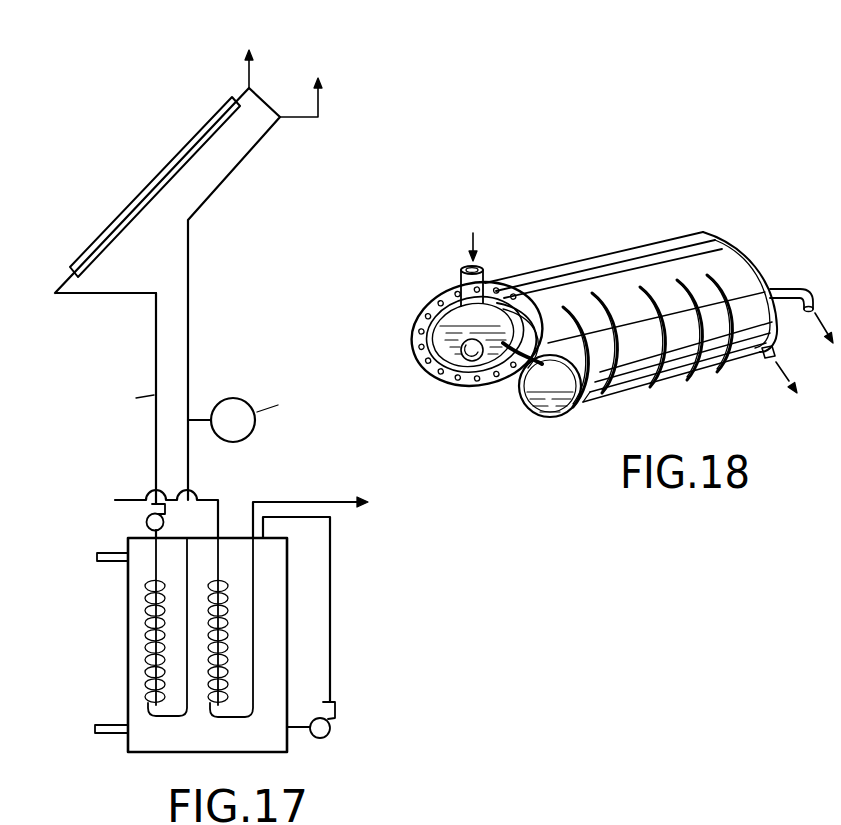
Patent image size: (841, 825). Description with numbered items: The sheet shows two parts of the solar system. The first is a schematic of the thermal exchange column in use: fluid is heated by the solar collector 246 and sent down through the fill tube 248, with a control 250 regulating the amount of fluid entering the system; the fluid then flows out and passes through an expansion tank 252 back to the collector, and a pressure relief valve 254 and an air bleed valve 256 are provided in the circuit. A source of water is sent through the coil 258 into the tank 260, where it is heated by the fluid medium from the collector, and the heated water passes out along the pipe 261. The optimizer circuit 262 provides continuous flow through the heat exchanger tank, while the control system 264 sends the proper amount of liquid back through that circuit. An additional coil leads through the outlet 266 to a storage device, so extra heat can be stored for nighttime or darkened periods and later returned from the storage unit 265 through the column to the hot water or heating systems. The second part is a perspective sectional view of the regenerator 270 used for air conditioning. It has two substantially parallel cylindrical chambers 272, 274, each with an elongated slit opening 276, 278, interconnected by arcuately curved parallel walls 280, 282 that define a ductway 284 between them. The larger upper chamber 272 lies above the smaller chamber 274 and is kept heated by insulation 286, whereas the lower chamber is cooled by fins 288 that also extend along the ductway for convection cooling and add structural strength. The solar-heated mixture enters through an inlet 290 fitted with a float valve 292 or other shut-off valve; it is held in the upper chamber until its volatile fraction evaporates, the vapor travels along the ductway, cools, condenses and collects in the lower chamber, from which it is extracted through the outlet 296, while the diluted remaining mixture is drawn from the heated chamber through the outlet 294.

In FIG. 17, the solar collector 246 is at (157, 175).
In FIG. 17, the fill tube 248 is at (154, 342).
In FIG. 17, the control 250 is at (147, 525).
In FIG. 17, the expansion tank 252 is at (250, 381).
In FIG. 17, the pressure relief valve 254 is at (303, 119).
In FIG. 17, the air bleed valve 256 is at (245, 87).
In FIG. 17, the coil 258 is at (211, 500).
In FIG. 17, the tank 260 is at (131, 642).
In FIG. 17, the pipe 261 is at (306, 501).
In FIG. 17, the optimizer circuit 262 is at (332, 557).
In FIG. 17, the control system 264 is at (331, 738).
In FIG. 17, the storage unit 265 is at (108, 563).
In FIG. 17, the outlet 266 is at (113, 736).
In FIG. 18, the regenerator 270 is at (661, 218).
In FIG. 18, the cylindrical chamber 272 is at (453, 307).
In FIG. 18, the cylindrical chamber 274 is at (560, 393).
In FIG. 18, the elongated slit opening 276 is at (507, 289).
In FIG. 18, the elongated slit opening 278 is at (588, 403).
In FIG. 18, the arcuately curved parallel wall 280 is at (500, 373).
In FIG. 18, the arcuately curved parallel wall 282 is at (511, 392).
In FIG. 18, the ductway 284 is at (537, 312).
In FIG. 18, the insulation 286 is at (421, 334).
In FIG. 18, the fins 288 is at (690, 378).
In FIG. 18, the inlet 290 is at (481, 264).
In FIG. 18, the float valve 292 is at (446, 375).
In FIG. 18, the outlet 294 is at (788, 287).
In FIG. 18, the outlet 296 is at (780, 352).